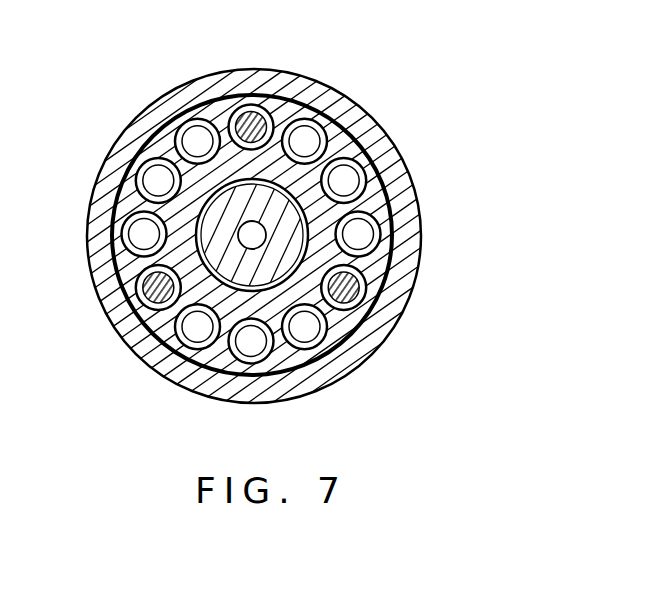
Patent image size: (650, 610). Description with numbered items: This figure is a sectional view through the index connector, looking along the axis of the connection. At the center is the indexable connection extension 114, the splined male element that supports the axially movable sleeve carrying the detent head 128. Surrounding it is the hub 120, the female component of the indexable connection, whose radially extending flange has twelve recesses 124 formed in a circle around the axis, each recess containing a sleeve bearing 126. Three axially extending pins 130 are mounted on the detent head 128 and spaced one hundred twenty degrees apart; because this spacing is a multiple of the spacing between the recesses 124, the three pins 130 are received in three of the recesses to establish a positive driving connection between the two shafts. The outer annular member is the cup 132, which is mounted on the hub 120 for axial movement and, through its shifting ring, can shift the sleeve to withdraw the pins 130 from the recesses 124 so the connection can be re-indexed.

The indexable connection extension 114 is at (273, 279).
The hub 120 is at (227, 375).
The recesses 124 is at (197, 140).
The sleeve bearing 126 is at (375, 167).
The detent head 128 is at (385, 201).
The pins 130 is at (253, 133).
The cup 132 is at (318, 92).